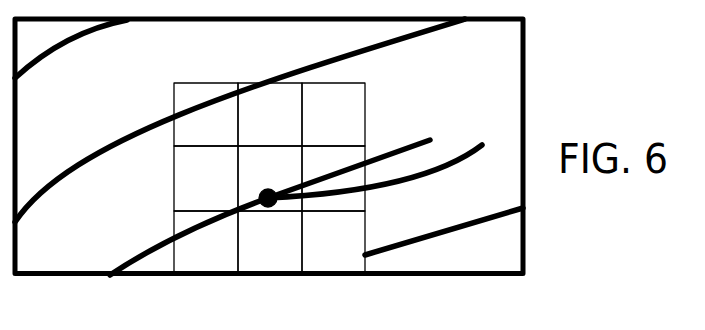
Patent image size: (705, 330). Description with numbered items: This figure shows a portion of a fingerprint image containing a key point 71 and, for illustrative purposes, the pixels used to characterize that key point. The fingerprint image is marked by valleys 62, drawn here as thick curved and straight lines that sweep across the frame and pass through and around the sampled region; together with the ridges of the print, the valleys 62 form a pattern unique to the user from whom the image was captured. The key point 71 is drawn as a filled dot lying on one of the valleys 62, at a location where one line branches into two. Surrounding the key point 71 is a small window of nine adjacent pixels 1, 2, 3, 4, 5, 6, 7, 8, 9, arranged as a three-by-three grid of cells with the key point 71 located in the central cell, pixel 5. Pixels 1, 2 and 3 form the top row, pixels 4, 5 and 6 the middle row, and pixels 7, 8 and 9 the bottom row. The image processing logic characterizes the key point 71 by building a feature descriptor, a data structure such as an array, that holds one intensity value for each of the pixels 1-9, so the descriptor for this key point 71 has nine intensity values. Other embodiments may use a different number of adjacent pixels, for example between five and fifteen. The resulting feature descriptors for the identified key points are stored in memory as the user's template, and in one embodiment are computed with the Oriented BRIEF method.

The adjacent pixel 1 is at (192, 83).
The adjacent pixel 2 is at (292, 83).
The adjacent pixel 3 is at (365, 123).
The adjacent pixel 4 is at (173, 163).
The adjacent pixel 5 is at (238, 158).
The adjacent pixel 6 is at (366, 201).
The adjacent pixel 7 is at (173, 265).
The adjacent pixel 8 is at (238, 265).
The adjacent pixel 9 is at (302, 265).
The valleys 62 is at (87, 146).
The key point 71 is at (265, 189).